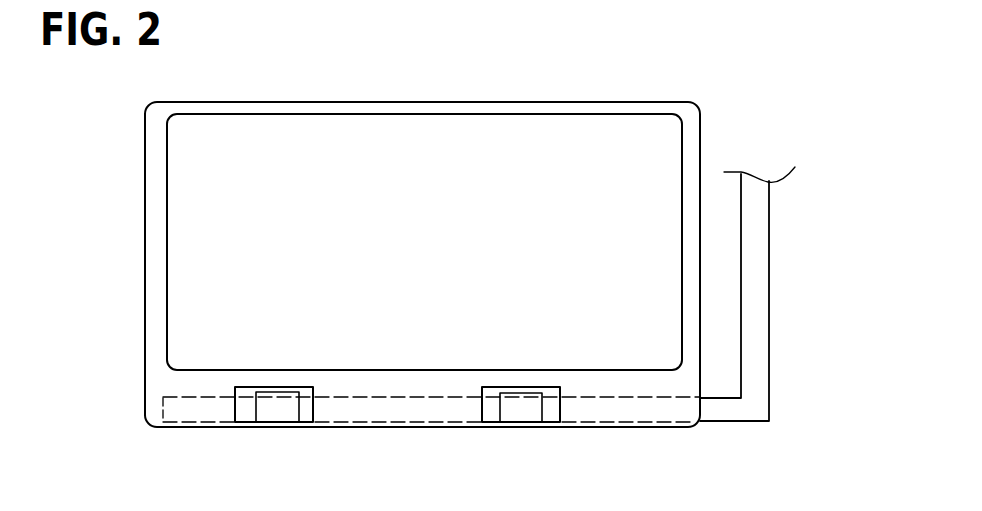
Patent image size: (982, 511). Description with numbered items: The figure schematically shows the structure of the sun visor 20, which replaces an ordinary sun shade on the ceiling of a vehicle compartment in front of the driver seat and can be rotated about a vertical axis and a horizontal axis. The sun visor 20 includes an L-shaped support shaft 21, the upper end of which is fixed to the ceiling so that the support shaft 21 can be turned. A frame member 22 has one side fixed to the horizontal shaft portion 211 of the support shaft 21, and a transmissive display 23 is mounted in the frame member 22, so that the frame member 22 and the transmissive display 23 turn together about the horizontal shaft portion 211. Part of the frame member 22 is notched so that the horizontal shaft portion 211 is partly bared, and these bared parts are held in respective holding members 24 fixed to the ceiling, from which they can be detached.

The sun visor 20 is at (567, 73).
The support shaft 21 is at (758, 252).
The frame member 22 is at (160, 380).
The transmissive display 23 is at (245, 113).
The holding member 24 is at (277, 410).
The horizontal shaft portion 211 is at (548, 413).